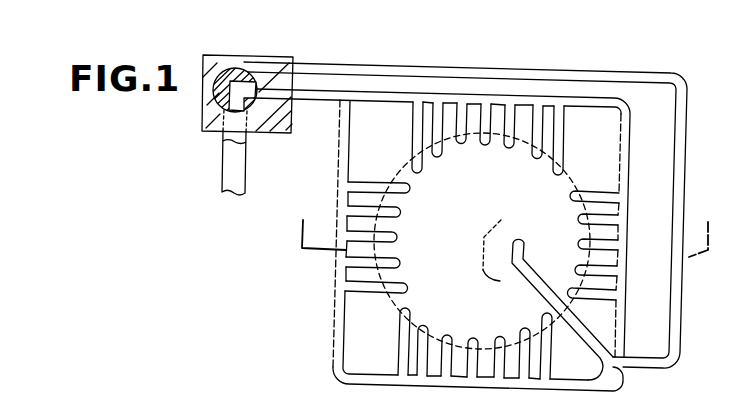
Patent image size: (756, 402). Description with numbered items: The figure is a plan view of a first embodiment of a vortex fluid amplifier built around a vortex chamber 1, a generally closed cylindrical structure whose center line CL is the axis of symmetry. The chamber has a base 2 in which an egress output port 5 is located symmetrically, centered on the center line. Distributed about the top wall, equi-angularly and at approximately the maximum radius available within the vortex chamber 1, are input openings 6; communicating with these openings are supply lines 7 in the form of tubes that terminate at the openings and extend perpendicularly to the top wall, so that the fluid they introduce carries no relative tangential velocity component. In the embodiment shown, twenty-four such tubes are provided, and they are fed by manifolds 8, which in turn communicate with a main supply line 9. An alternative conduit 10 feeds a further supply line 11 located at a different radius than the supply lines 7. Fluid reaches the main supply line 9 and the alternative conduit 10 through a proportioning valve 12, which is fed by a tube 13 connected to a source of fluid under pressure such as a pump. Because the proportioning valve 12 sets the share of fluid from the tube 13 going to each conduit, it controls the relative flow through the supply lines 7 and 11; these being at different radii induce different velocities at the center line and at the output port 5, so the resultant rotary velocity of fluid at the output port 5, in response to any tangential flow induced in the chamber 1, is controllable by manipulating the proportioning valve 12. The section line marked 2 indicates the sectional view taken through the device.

The vortex chamber 1 is at (465, 214).
The base 2 is at (508, 235).
The output port 5 is at (363, 361).
The input openings 6 is at (435, 153).
The supply lines 7 is at (413, 130).
The manifolds 8 is at (393, 94).
The main supply line 9 is at (319, 107).
The alternative conduit 10 is at (335, 62).
The further supply line 11 is at (517, 239).
The proportioning valve 12 is at (206, 104).
The tube 13 is at (233, 163).